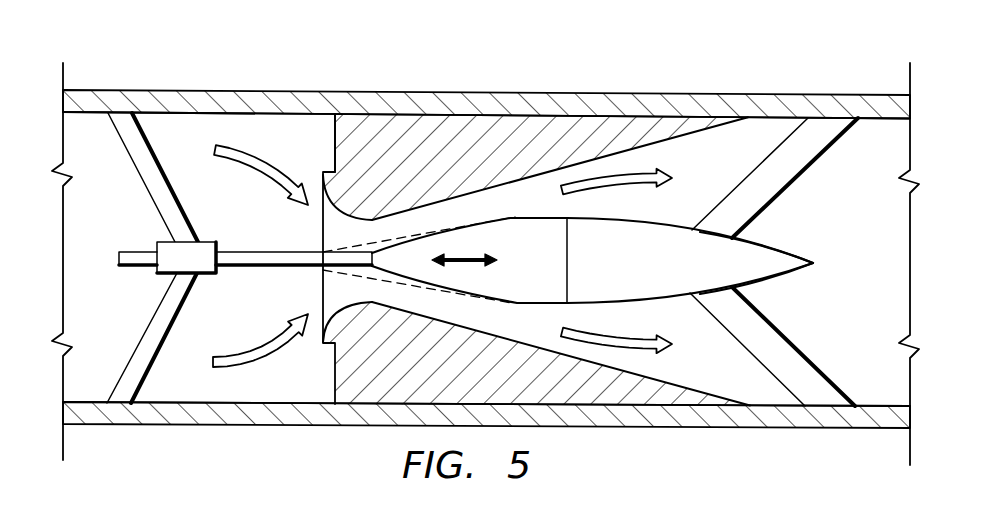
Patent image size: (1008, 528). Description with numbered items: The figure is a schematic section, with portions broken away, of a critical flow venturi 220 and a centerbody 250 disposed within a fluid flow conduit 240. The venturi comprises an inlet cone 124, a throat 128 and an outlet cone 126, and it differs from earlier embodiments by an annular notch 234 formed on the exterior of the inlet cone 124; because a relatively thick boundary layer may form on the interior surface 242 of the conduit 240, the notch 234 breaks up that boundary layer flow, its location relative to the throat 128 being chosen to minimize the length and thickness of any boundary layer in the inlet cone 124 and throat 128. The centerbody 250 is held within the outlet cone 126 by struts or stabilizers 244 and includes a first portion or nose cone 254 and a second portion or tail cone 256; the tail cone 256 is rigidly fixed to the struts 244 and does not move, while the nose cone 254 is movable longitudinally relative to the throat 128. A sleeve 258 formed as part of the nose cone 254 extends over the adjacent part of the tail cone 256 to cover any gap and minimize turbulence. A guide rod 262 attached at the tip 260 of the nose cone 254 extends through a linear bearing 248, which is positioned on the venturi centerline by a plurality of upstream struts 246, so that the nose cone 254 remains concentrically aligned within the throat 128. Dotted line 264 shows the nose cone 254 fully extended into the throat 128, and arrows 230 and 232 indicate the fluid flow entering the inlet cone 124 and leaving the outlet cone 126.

The fluid flow conduit 240 is at (112, 97).
The interior surface 242 is at (182, 117).
The critical flow venturi 220 is at (410, 118).
The annular notch 234 is at (332, 168).
The inlet cone 124 is at (322, 182).
The throat 128 is at (377, 223).
The outlet cone 126 is at (519, 186).
The nose cone 254 is at (412, 268).
The dotted line 264 is at (405, 215).
The tip 260 is at (377, 287).
The centerbody 250 is at (527, 287).
The struts 246 is at (135, 143).
The linear bearing 248 is at (155, 245).
The guide rod 262 is at (245, 262).
The sleeve 258 is at (625, 218).
The tail cone 256 is at (780, 257).
The struts 244 is at (827, 145).
The inlet flow arrows 230 is at (233, 166).
The exhaust flow arrows 232 is at (668, 176).